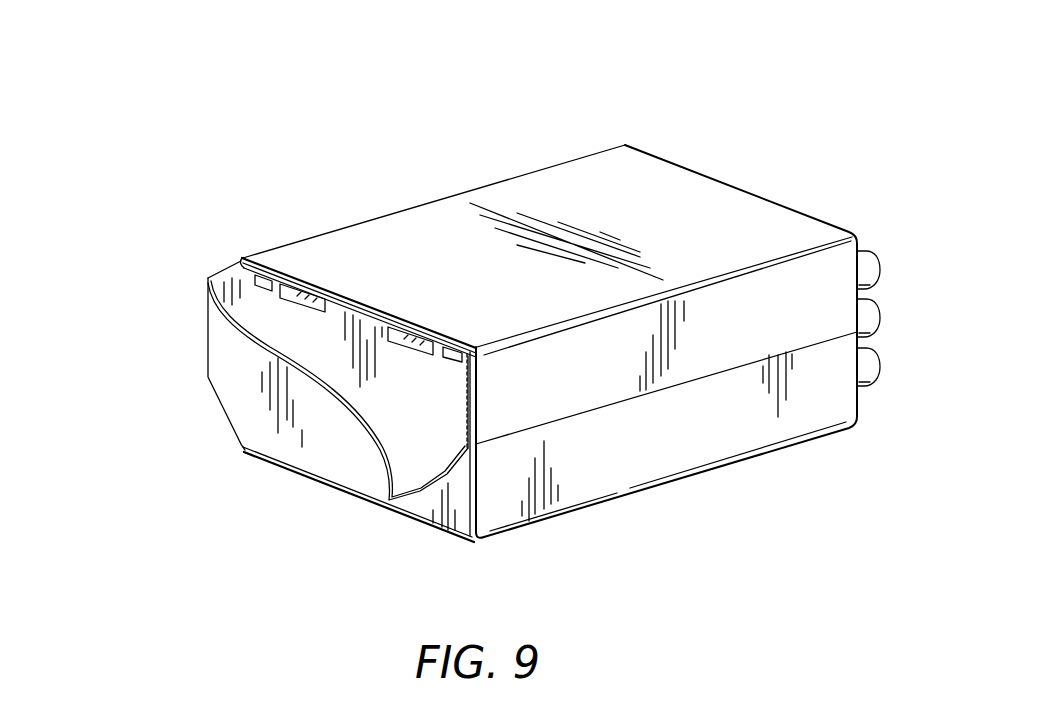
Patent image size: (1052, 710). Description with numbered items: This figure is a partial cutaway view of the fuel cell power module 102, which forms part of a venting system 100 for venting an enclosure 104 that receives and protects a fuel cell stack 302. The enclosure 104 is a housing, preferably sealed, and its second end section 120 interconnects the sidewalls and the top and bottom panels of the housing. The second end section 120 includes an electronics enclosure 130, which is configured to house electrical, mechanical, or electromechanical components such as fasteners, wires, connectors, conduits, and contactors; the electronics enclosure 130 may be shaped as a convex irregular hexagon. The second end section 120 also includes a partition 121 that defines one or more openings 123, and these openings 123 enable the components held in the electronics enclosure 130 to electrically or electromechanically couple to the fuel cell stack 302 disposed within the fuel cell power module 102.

The venting system 100 is at (119, 104).
The fuel cell power module 102 is at (234, 186).
The enclosure 104 is at (619, 128).
The second end section 120 is at (410, 408).
The partition 121 is at (376, 95).
The openings 123 is at (452, 337).
The electronics enclosure 130 is at (263, 420).
The fuel cell stack 302 is at (728, 326).